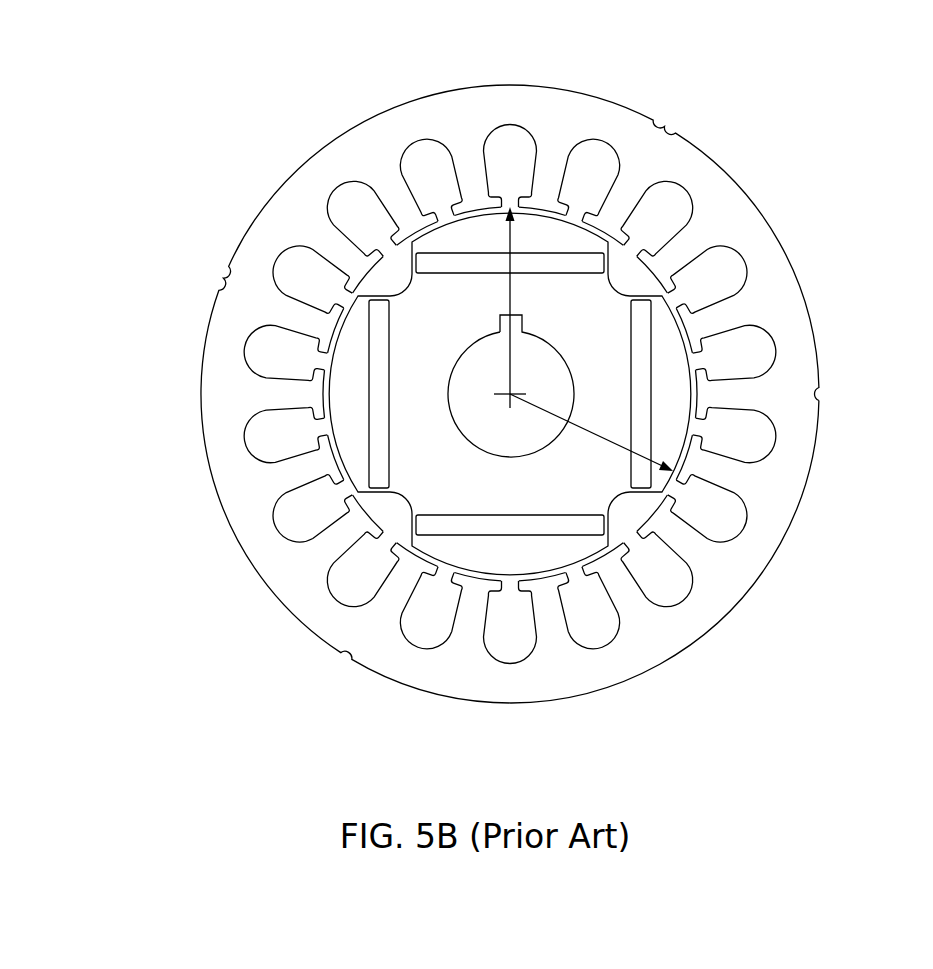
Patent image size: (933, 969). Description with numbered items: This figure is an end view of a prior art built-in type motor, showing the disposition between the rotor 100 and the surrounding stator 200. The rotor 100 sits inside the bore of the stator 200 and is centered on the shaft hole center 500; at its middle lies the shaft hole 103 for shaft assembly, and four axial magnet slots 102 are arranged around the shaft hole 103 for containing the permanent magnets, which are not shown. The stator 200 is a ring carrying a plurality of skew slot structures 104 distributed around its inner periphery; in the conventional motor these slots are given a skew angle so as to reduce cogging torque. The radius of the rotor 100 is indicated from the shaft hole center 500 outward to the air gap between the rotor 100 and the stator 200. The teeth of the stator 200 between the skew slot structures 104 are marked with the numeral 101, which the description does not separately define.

The rotor 100 is at (437, 477).
The stator teeth 101 is at (511, 205).
The axial magnet slots 102 is at (532, 523).
The shaft hole 103 is at (573, 385).
The skew slot structures 104 is at (680, 597).
The stator 200 is at (705, 173).
The shaft hole center 500 is at (497, 404).